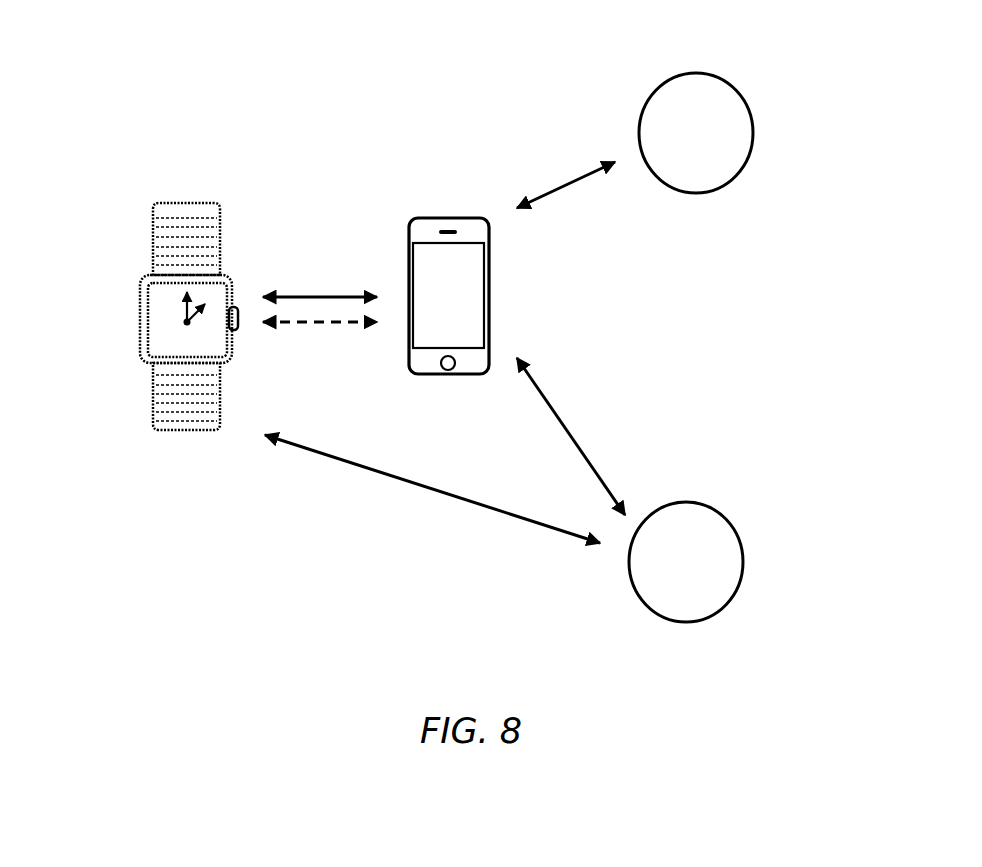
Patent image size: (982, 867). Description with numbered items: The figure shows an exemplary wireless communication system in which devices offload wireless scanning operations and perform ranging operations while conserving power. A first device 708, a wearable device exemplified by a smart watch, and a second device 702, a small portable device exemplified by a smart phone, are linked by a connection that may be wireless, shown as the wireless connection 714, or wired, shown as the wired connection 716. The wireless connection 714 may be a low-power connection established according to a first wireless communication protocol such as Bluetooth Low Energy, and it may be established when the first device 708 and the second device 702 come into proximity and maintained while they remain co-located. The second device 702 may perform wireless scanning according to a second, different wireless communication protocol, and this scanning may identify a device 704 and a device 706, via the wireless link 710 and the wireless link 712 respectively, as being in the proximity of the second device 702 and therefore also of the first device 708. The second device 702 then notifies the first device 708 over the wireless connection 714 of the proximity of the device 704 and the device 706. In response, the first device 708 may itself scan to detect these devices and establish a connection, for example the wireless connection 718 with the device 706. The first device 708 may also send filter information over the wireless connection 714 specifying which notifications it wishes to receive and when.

The second device 702 is at (427, 215).
The device 704 is at (724, 76).
The device 706 is at (715, 507).
The first device 708 is at (140, 278).
The wireless link 710 is at (565, 181).
The wireless link 712 is at (565, 424).
The wireless connection 714 is at (292, 294).
The wired connection 716 is at (342, 318).
The wireless connection 718 is at (425, 482).